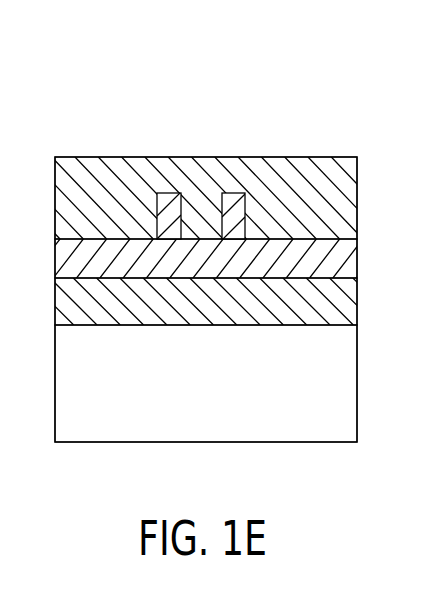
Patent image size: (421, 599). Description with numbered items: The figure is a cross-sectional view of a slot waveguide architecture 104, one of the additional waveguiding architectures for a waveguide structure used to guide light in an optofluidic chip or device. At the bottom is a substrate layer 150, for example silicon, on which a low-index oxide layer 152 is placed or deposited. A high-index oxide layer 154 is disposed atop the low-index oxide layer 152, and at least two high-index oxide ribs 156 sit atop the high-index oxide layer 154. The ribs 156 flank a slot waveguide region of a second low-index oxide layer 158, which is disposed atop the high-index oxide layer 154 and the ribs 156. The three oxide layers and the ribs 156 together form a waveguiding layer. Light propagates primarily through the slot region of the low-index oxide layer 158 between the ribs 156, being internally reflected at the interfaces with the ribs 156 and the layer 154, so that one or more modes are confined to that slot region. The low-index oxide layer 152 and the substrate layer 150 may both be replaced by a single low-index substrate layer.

The slot waveguide architecture 104 is at (61, 107).
The substrate layer 150 is at (343, 382).
The low-index oxide layer 152 is at (343, 310).
The high-index oxide layer 154 is at (343, 265).
The high-index oxide ribs 156 is at (163, 198).
The second low-index oxide layer 158 is at (108, 168).